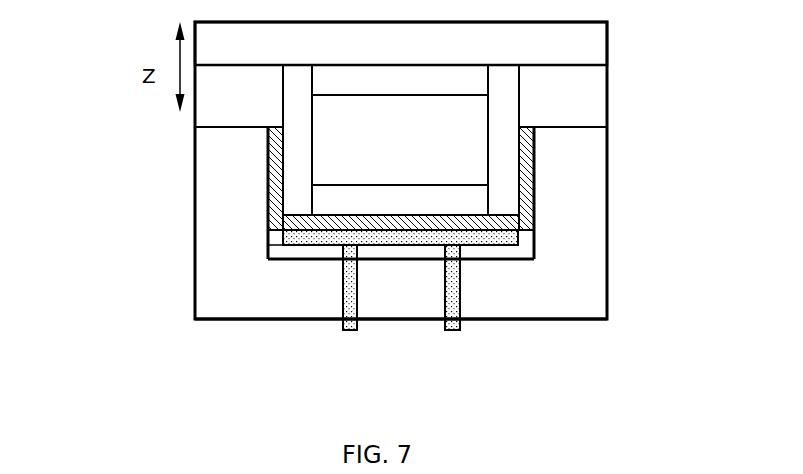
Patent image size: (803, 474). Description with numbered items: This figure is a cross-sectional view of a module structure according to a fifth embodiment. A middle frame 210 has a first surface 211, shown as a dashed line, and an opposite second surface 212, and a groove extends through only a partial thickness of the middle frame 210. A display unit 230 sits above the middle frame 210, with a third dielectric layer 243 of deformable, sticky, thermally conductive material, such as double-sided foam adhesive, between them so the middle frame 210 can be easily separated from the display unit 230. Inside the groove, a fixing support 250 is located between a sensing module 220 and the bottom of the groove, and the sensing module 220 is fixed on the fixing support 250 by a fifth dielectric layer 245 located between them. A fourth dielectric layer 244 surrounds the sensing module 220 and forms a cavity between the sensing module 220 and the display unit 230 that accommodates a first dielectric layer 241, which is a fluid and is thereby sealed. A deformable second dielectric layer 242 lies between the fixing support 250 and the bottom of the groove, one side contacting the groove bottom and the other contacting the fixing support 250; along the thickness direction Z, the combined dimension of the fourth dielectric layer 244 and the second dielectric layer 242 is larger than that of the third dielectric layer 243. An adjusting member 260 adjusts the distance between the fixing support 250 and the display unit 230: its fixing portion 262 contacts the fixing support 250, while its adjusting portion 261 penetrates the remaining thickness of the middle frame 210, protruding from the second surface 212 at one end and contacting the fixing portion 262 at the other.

The middle frame 210 is at (607, 306).
The first surface 211 is at (607, 126).
The second surface 212 is at (547, 322).
The sensing module 220 is at (400, 140).
The display unit 230 is at (401, 43).
The first dielectric layer 241 is at (400, 80).
The second dielectric layer 242 is at (525, 251).
The third dielectric layer 243 is at (401, 96).
The fourth dielectric layer 244 is at (401, 140).
The fifth dielectric layer 245 is at (400, 200).
The fixing support 250 is at (535, 172).
The adjusting member 260 is at (281, 272).
The adjusting portion 261 is at (348, 287).
The fixing portion 262 is at (267, 246).